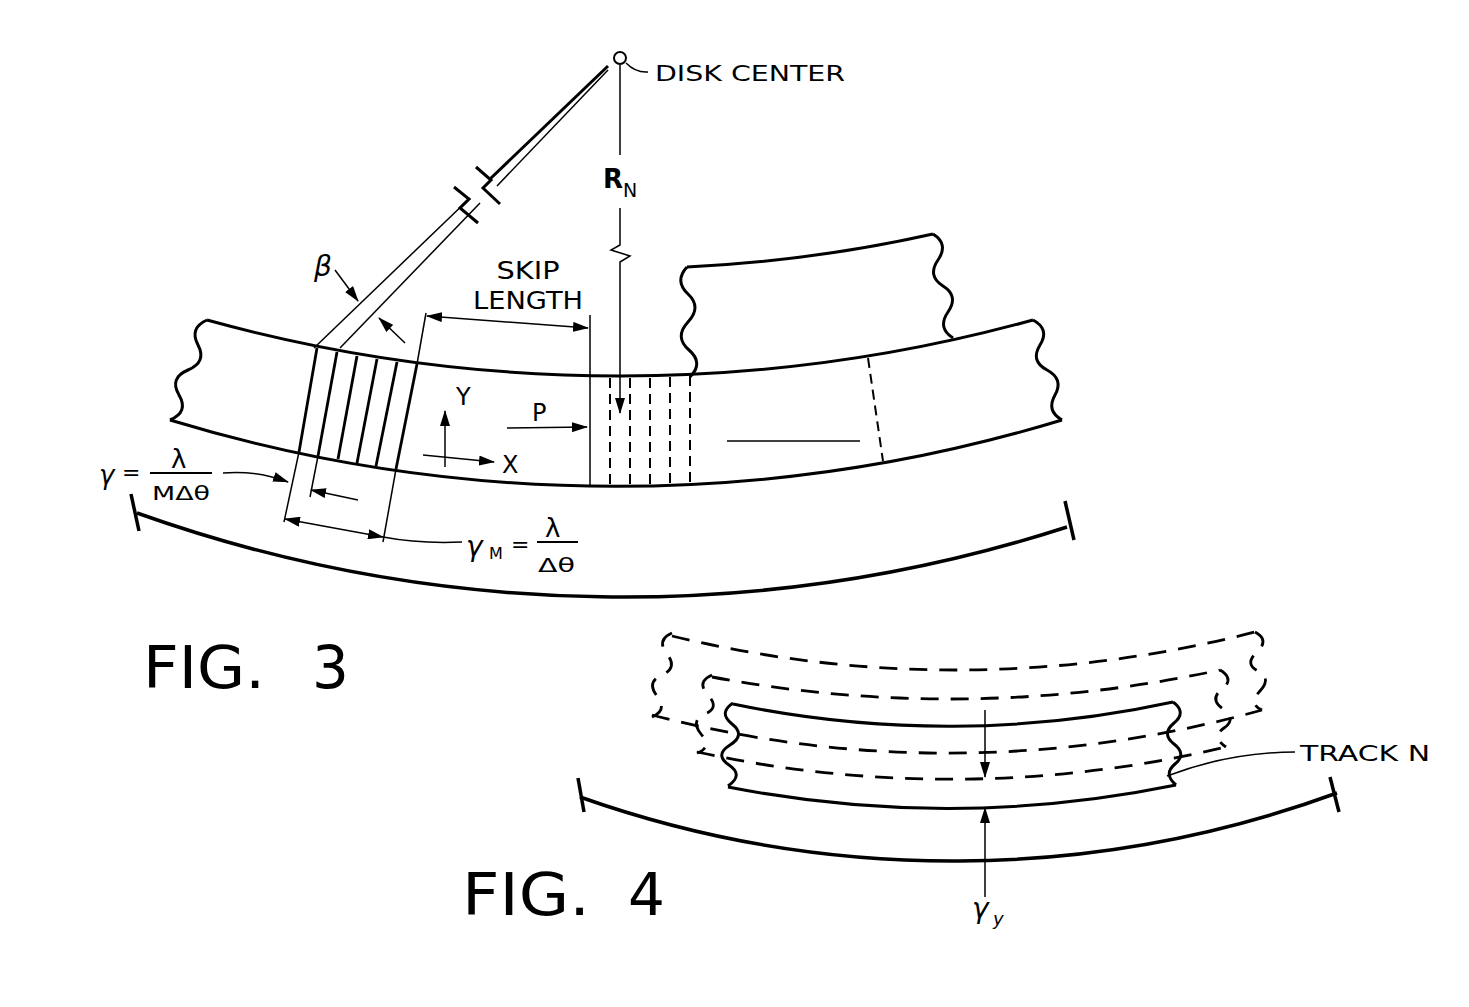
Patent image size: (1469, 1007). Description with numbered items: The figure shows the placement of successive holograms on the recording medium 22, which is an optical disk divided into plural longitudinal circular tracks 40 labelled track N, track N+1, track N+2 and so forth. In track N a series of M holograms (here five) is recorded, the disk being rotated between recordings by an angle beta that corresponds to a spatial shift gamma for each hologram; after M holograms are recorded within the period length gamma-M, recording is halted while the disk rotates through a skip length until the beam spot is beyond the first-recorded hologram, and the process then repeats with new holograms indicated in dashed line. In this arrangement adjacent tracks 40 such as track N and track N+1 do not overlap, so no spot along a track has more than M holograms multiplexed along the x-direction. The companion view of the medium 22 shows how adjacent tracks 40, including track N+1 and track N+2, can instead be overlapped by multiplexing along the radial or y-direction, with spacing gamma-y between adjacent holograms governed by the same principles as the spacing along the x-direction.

In FIG. 3, the recording medium 22 is at (415, 583).
In FIG. 4, the recording medium 22 is at (1227, 827).
In FIG. 3, the longitudinal circular tracks 40 is at (1003, 347).
In FIG. 3, the track N+ 1 is at (908, 325).
In FIG. 4, the track N+ 1 is at (1230, 728).
In FIG. 4, the track N+ 2 is at (1265, 678).